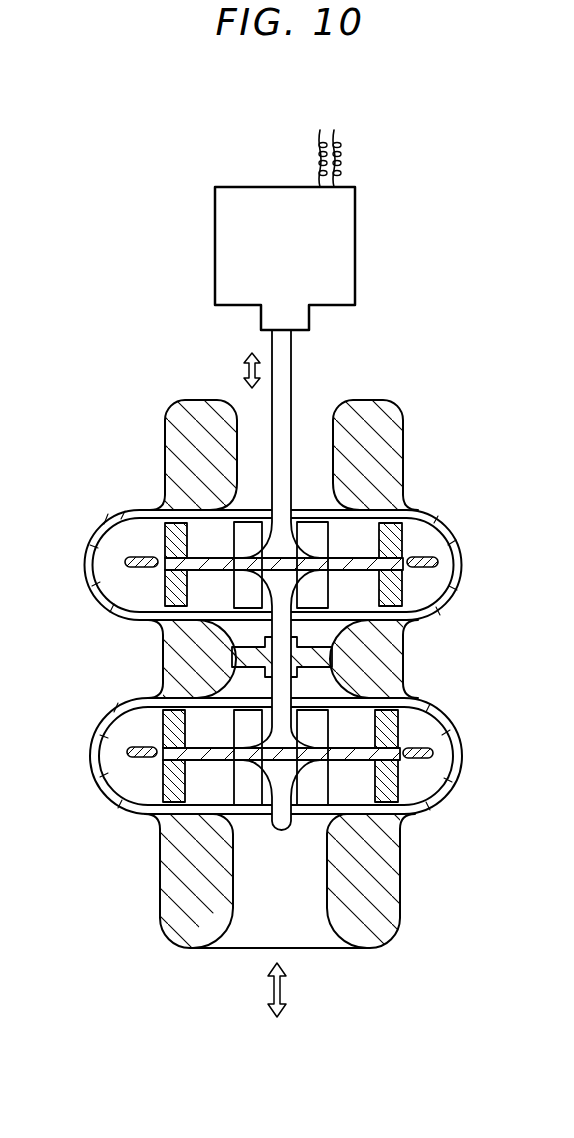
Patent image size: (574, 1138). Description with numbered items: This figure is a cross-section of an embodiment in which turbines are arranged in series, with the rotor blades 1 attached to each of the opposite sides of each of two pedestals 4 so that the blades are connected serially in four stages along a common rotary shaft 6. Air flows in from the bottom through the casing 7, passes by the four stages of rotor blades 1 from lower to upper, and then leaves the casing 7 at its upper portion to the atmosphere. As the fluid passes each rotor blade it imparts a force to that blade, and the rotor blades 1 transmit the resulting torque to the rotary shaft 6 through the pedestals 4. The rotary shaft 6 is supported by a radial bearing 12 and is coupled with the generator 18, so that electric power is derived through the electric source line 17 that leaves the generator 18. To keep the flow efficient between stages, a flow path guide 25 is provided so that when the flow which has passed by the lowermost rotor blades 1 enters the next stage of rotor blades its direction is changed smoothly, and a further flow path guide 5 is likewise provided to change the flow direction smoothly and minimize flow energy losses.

The rotor blade 1 is at (168, 535).
The pedestal 4 is at (353, 562).
The flow path guide 5 is at (293, 543).
The rotary shaft 6 is at (288, 372).
The casing 7 is at (400, 433).
The radial bearing 12 is at (310, 665).
The electric source line 17 is at (326, 134).
The generator 18 is at (355, 253).
The flow path guide 25 is at (128, 567).